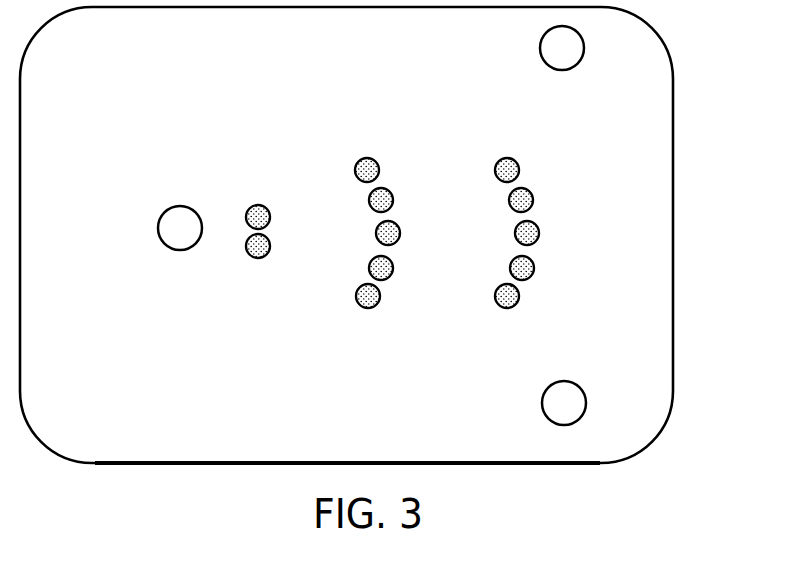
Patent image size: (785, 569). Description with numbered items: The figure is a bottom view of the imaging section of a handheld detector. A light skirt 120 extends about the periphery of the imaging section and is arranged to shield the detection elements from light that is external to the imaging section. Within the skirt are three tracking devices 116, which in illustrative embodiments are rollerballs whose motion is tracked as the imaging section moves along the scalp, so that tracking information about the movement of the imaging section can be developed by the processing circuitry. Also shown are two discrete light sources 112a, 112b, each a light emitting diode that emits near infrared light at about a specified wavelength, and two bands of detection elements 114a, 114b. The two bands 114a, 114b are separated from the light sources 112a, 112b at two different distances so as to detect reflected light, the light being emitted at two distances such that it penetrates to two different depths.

The light skirt 120 is at (679, 293).
The tracking devices 116 is at (539, 50).
The first light source 112a is at (270, 184).
The second light source 112b is at (254, 266).
The first band of detection elements 114a is at (360, 321).
The second band of detection elements 114b is at (493, 322).